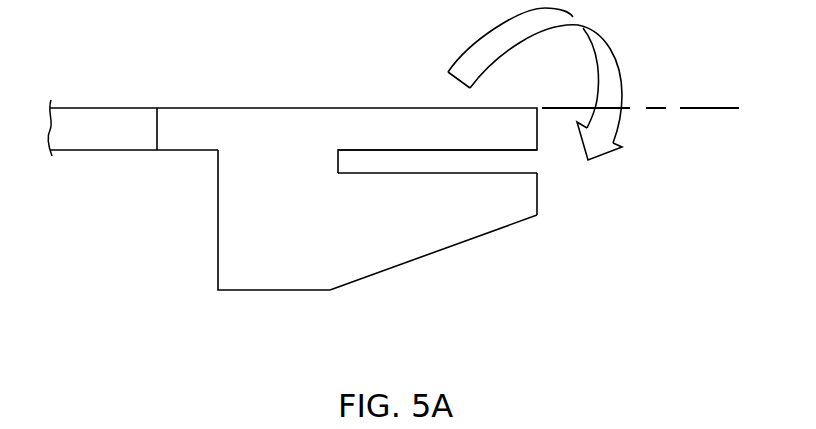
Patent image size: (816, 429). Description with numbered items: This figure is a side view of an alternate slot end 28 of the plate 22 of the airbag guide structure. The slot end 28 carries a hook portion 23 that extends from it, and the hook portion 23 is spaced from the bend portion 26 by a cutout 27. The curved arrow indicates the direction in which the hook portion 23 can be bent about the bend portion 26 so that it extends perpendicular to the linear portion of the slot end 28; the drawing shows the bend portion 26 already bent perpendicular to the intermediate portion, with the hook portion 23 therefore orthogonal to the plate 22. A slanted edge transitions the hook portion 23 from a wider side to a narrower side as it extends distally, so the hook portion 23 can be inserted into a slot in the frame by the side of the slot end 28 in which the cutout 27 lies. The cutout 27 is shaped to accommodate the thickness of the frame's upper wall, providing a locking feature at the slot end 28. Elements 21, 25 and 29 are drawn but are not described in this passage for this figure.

The inclined bottom wall 21 is at (380, 272).
The plate 22 is at (77, 108).
The hook portion 23 is at (537, 190).
The plate aperture 25 is at (188, 108).
The bend portion 26 is at (332, 108).
The cutout 27 is at (340, 160).
The slot end 28 is at (492, 277).
The bottom wall 29 is at (230, 290).